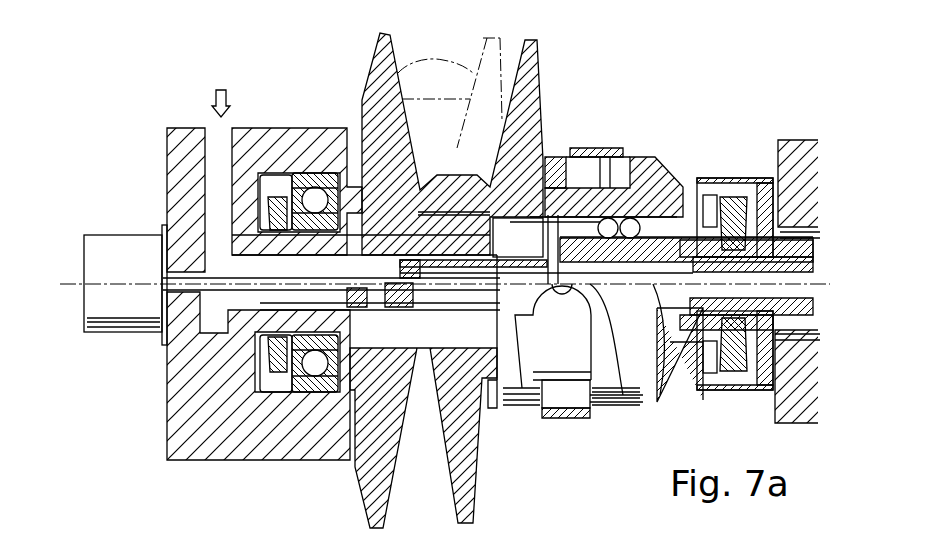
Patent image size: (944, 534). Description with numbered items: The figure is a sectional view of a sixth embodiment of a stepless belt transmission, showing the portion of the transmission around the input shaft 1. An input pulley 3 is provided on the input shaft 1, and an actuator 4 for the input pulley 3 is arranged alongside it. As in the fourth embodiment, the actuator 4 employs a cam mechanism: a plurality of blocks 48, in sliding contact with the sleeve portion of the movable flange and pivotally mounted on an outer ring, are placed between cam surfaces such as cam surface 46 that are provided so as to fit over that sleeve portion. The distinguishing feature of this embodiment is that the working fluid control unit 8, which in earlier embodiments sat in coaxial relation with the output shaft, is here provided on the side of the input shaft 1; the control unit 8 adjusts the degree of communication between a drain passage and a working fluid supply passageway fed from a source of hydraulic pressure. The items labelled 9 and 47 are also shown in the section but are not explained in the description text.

The input shaft 1 is at (813, 248).
The input pulley 3 is at (540, 57).
The actuator 4 is at (656, 146).
The working fluid control unit 8 is at (200, 362).
The shaft end 9 is at (116, 334).
The cam surface 46 is at (533, 387).
The retaining element 47 is at (605, 390).
The block 48 is at (563, 400).